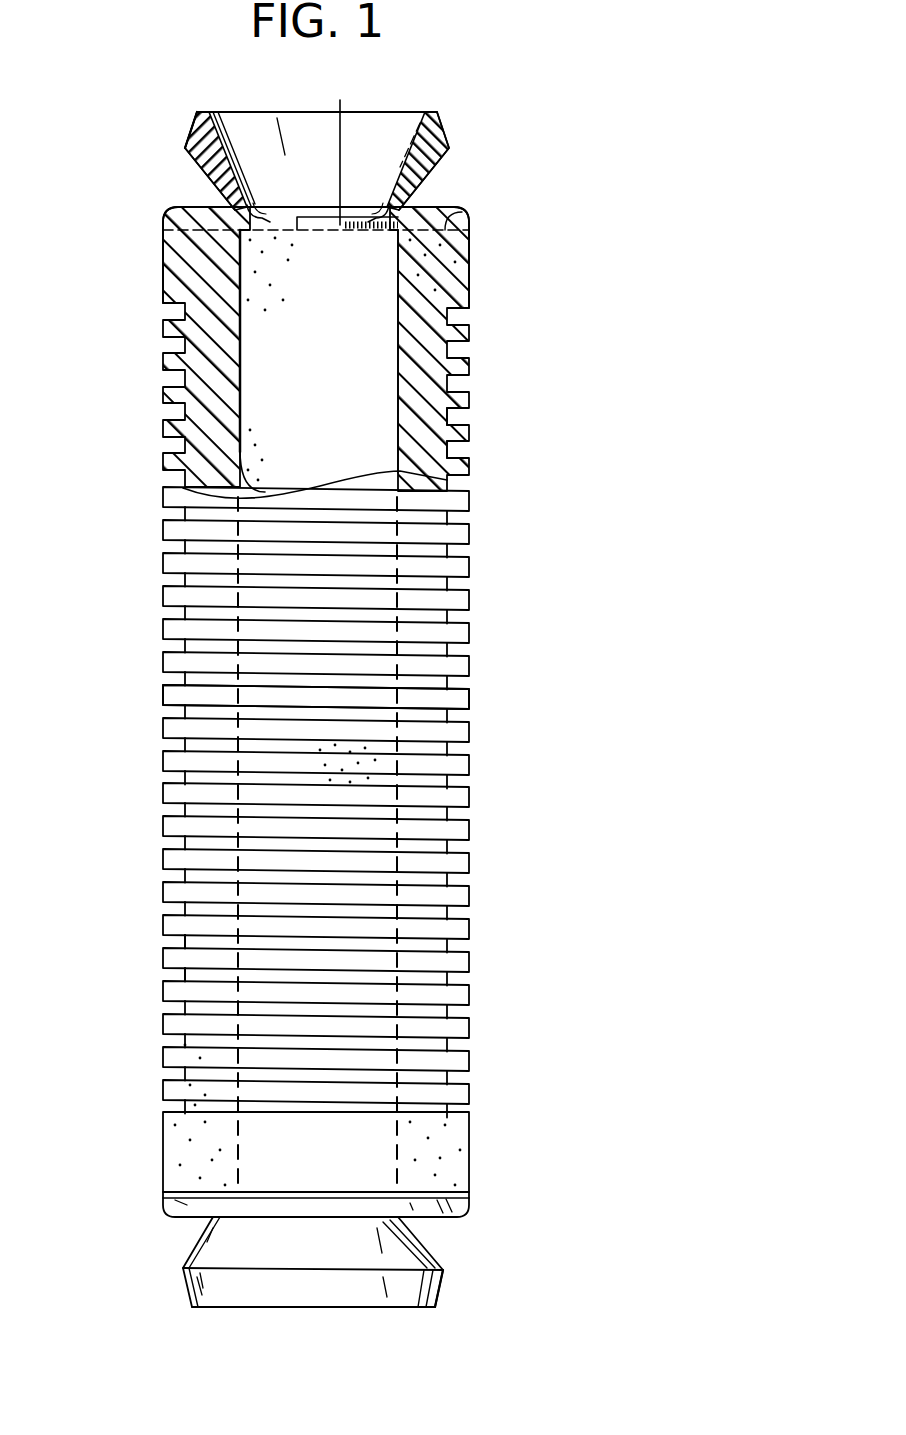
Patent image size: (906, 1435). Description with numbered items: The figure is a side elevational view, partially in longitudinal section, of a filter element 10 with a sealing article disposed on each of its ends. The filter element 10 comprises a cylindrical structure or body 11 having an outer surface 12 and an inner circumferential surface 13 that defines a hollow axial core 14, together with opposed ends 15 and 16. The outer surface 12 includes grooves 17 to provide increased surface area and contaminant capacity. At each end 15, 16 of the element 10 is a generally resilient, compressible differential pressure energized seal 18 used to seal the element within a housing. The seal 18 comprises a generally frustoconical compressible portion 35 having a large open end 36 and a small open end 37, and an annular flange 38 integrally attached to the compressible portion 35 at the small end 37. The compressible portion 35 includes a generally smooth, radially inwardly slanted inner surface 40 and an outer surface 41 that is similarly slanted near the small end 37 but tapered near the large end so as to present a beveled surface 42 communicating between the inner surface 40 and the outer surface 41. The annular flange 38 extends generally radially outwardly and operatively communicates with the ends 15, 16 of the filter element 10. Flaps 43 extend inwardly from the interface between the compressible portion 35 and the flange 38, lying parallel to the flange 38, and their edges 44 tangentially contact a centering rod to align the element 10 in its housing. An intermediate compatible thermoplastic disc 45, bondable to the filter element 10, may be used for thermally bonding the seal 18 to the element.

The filter element 10 is at (495, 333).
The cylindrical structure or body 11 is at (470, 603).
The outer surface 12 is at (470, 695).
The inner circumferential surface 13 is at (257, 403).
The hollow axial core 14 is at (375, 307).
The end 15 is at (163, 270).
The end 16 is at (452, 1167).
The grooves 17 is at (447, 453).
The differential pressure energized seal 18 is at (452, 140).
The compressible portion 35 is at (443, 120).
The large open end 36 is at (398, 111).
The small open end 37 is at (295, 218).
The annular flange 38 is at (463, 212).
The inner surface 40 is at (240, 212).
The outer surface 41 is at (197, 172).
The beveled surface 42 is at (192, 137).
The flaps 43 is at (245, 222).
The edges 44 is at (323, 225).
The intermediate compatible thermoplastic disc 45 is at (470, 231).